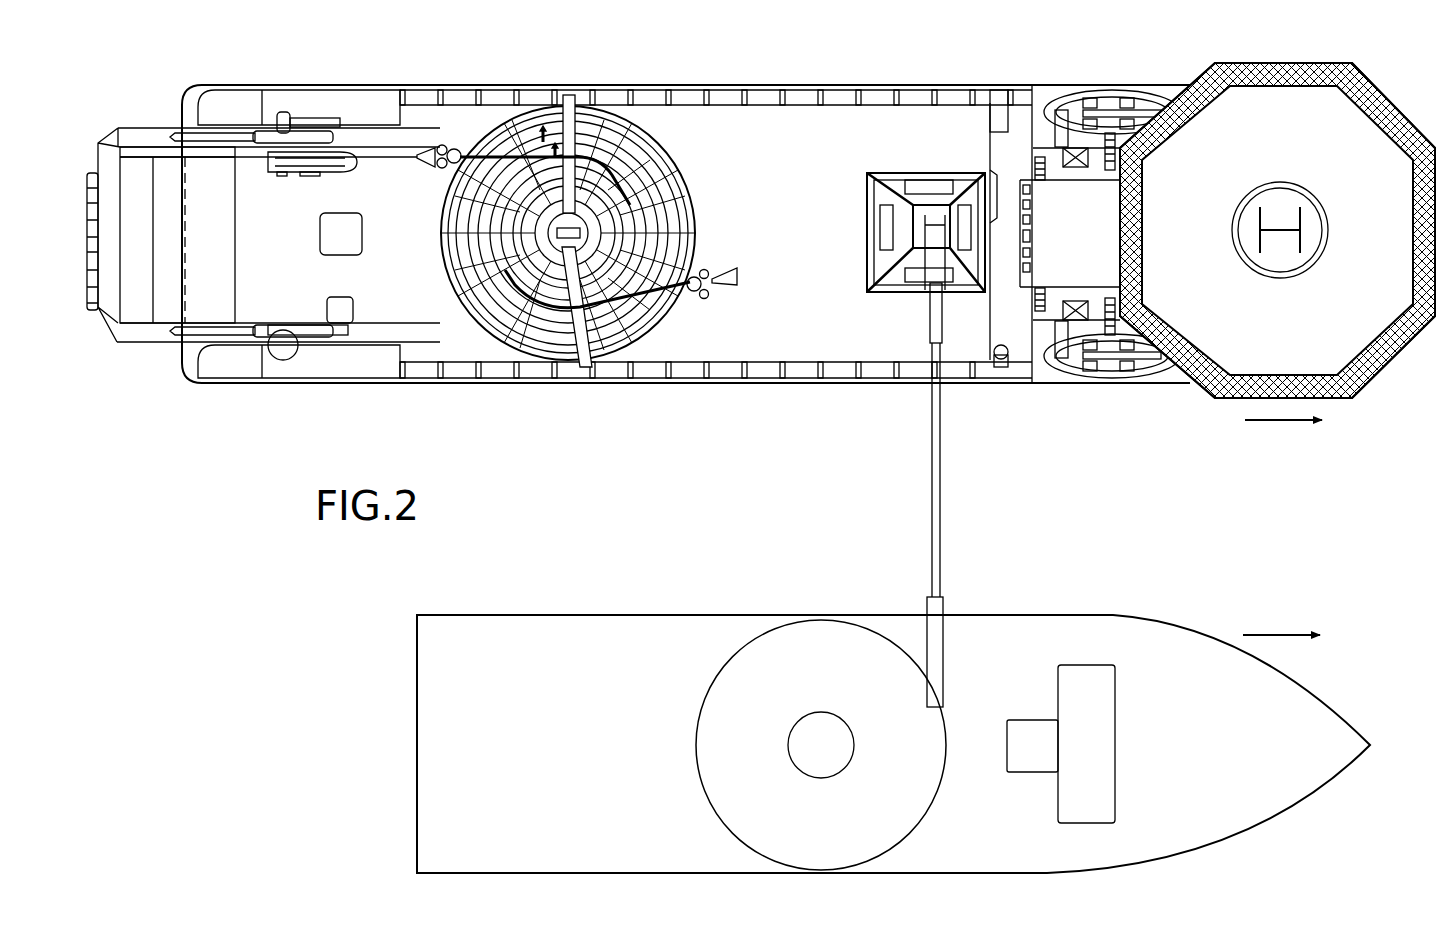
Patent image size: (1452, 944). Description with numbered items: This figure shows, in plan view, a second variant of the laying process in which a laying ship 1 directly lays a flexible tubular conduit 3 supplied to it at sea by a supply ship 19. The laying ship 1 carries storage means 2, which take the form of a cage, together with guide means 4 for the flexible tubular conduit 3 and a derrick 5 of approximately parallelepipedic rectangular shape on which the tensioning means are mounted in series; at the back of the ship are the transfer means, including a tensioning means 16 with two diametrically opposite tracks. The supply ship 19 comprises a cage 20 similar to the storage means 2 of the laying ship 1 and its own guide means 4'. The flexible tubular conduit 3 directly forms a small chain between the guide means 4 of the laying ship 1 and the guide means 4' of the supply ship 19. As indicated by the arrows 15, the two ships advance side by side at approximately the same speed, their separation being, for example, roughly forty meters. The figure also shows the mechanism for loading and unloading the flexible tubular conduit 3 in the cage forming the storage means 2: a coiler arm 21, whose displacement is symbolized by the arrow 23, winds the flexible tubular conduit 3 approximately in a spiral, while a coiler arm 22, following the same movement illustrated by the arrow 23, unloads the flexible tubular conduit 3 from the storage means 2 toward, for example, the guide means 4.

The ship 1 is at (492, 398).
The storage means 2 is at (690, 205).
The flexible tubular conduit 3 is at (930, 492).
The guide means 4 is at (915, 318).
The guide means 4' is at (904, 639).
The derrick 5 is at (898, 171).
The arrow 15 is at (1256, 425).
The tensioning means 16 is at (300, 179).
The supply ship 19 is at (1130, 620).
The cage 20 is at (710, 690).
The coiler arm 21 is at (588, 143).
The coiler arm 22 is at (658, 300).
The arrow 23 is at (530, 135).